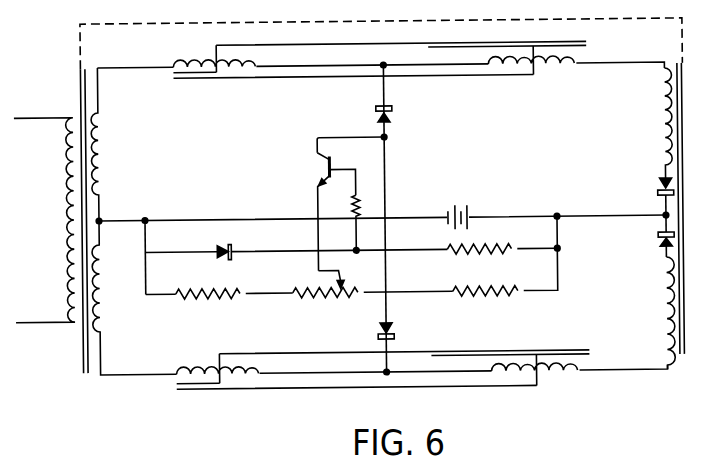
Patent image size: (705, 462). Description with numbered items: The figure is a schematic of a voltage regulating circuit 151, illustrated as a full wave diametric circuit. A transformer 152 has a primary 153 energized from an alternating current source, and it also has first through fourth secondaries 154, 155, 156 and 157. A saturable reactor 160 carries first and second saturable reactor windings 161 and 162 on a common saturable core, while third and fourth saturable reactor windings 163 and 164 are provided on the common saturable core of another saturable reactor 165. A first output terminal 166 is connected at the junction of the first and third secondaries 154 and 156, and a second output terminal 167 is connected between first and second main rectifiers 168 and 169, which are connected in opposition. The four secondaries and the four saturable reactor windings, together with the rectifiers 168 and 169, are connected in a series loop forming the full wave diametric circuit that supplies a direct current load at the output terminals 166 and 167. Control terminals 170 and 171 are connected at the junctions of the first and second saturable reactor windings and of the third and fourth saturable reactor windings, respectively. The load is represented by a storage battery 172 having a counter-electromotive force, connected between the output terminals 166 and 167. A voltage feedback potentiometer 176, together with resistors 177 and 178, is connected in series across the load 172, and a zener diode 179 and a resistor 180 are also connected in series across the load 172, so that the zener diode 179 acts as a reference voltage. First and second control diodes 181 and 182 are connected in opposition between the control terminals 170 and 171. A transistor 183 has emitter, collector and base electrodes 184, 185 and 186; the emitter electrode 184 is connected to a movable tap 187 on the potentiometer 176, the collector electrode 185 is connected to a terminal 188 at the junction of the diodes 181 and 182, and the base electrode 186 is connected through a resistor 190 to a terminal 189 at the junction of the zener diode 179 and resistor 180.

The voltage regulating circuit 151 is at (518, 174).
The transformer 152 is at (79, 94).
The primary 153 is at (75, 186).
The first secondary 154 is at (99, 137).
The second secondary 155 is at (664, 105).
The third secondary 156 is at (99, 312).
The fourth secondary 157 is at (668, 306).
The saturable reactor 160 is at (286, 71).
The first saturable reactor winding 161 is at (193, 56).
The second saturable reactor winding 162 is at (587, 58).
The third saturable reactor winding 163 is at (248, 365).
The fourth saturable reactor winding 164 is at (563, 367).
The saturable reactor 165 is at (458, 390).
The first output terminal 166 is at (101, 217).
The second output terminal 167 is at (663, 219).
The first main rectifier 168 is at (659, 188).
The second main rectifier 169 is at (660, 246).
The control terminal 170 is at (388, 68).
The control terminal 171 is at (389, 370).
The storage battery 172 is at (472, 211).
The voltage feedback potentiometer 176 is at (324, 293).
The resistor 177 is at (198, 296).
The resistor 178 is at (477, 295).
The zener diode 179 is at (232, 253).
The resistor 180 is at (475, 255).
The first control diode 181 is at (391, 117).
The second control diode 182 is at (391, 328).
The transistor 183 is at (328, 204).
The emitter electrode 184 is at (324, 185).
The collector electrode 185 is at (320, 156).
The base electrode 186 is at (343, 168).
The movable tap 187 is at (346, 272).
The terminal 188 is at (387, 138).
The terminal 189 is at (356, 249).
The resistor 190 is at (356, 201).